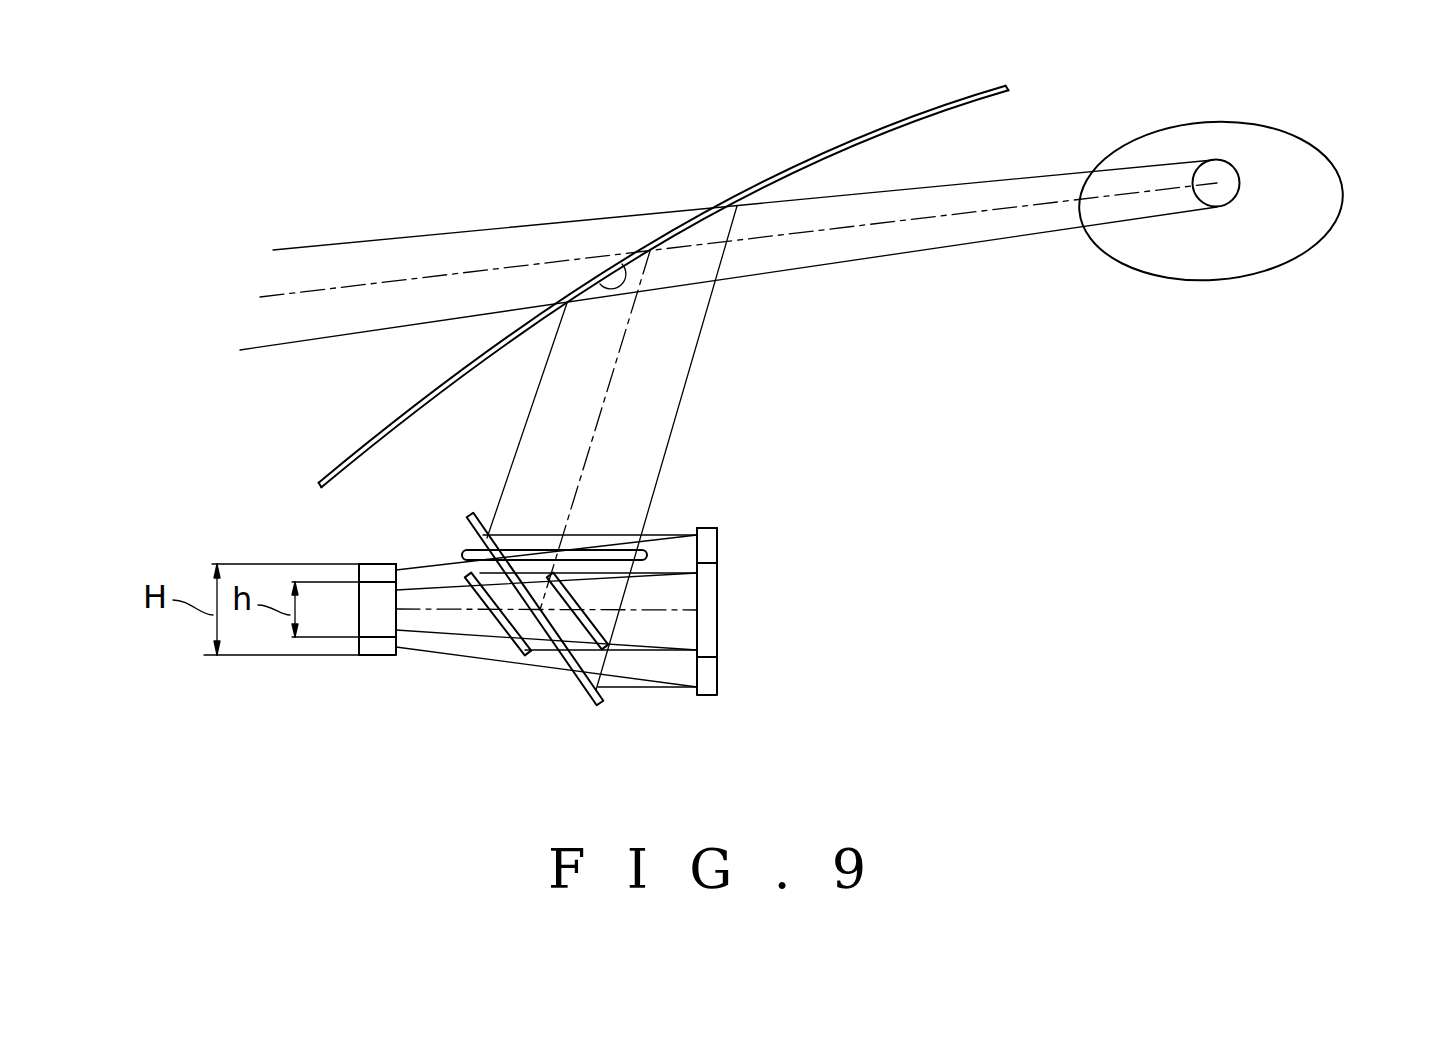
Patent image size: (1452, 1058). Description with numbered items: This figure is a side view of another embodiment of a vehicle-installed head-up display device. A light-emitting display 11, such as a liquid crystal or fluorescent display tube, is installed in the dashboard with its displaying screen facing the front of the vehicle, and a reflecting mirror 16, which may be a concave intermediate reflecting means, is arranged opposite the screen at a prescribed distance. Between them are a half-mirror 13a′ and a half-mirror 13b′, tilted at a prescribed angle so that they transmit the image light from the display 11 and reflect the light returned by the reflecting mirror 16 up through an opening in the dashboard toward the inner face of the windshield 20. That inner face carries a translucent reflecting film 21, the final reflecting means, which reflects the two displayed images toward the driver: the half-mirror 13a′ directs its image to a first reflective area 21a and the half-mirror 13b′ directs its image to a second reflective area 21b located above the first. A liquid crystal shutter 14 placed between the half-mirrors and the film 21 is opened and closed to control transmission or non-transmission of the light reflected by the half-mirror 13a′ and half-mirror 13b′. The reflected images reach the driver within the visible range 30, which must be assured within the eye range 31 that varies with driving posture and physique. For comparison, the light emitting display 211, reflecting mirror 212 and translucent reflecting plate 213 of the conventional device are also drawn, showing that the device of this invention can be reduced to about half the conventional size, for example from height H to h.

The windshield 20 is at (817, 157).
The translucent reflecting film 21 is at (593, 290).
The first reflective area 21a is at (623, 333).
The second reflective area 21b is at (703, 223).
The visible range 30 is at (1235, 202).
The eye range 31 is at (1343, 203).
The light-emitting display 11 is at (383, 620).
The light emitting display 211 is at (377, 562).
The reflecting mirror 212 is at (717, 540).
The translucent reflecting plate 213 is at (607, 707).
The liquid crystal shutter 14 is at (612, 547).
The half-mirror 13a′ is at (503, 623).
The half-mirror 13b′ is at (577, 625).
The reflecting mirror 16 is at (708, 627).